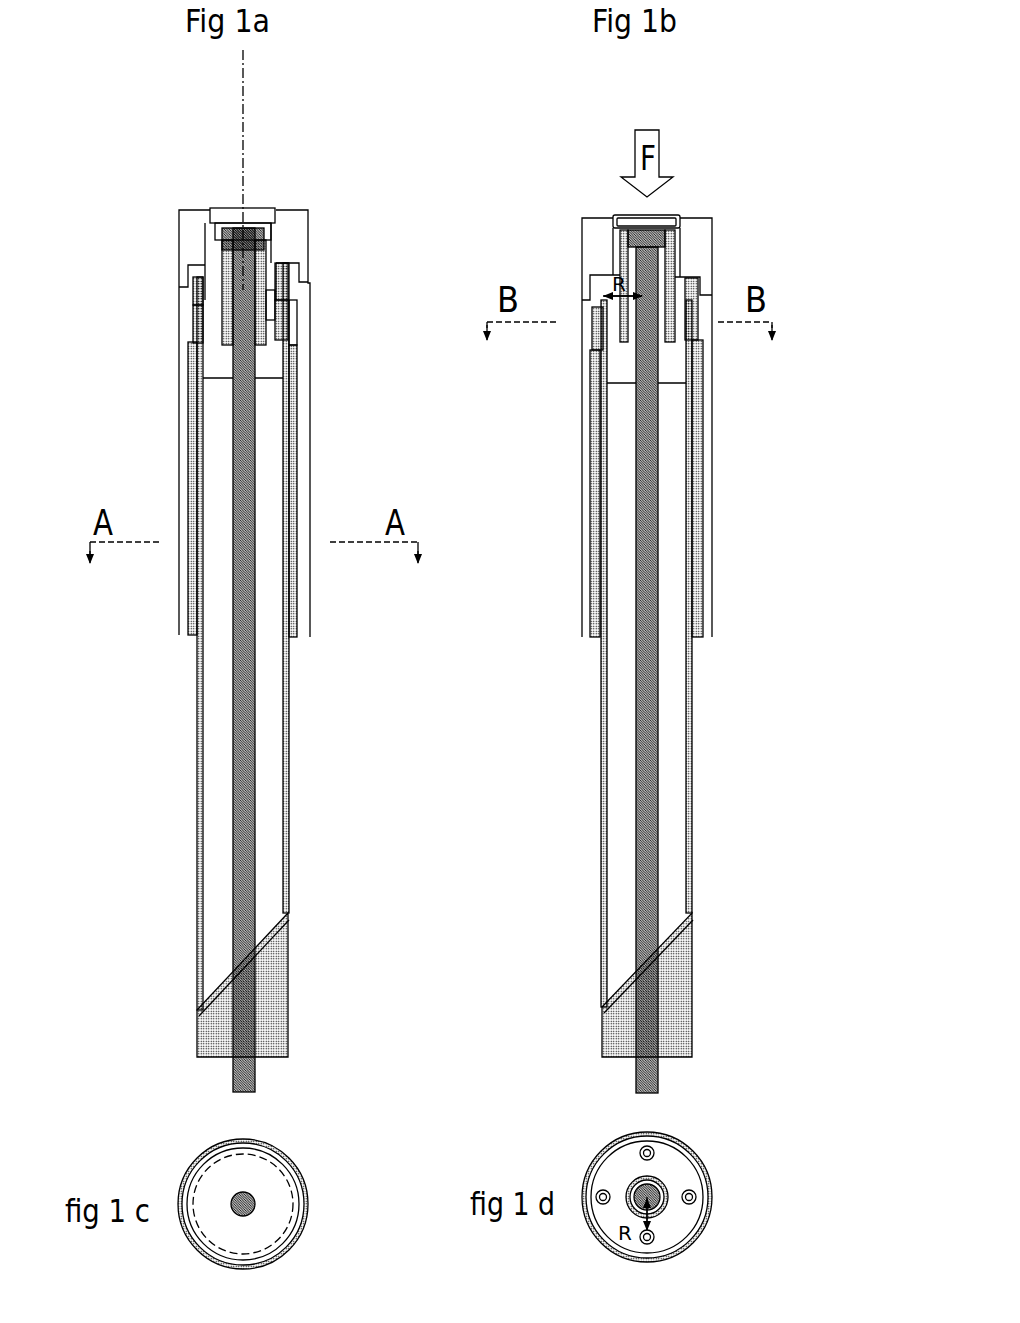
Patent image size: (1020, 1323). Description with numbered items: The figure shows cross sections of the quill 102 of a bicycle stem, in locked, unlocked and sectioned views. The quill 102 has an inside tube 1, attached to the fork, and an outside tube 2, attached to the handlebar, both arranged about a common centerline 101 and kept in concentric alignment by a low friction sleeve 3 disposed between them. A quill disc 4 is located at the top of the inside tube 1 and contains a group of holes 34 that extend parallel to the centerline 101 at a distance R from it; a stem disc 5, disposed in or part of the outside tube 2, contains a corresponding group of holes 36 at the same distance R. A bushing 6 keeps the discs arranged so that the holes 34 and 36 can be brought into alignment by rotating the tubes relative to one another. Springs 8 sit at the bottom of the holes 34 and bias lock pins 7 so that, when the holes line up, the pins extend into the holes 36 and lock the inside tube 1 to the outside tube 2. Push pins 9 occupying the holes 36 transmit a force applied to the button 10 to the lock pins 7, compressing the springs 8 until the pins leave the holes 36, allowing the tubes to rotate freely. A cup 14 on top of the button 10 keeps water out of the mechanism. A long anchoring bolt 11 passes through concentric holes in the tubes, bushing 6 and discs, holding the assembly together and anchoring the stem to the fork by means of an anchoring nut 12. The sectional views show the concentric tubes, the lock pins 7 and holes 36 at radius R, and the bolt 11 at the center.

In FIG. 1a, the inside tube 1 is at (200, 834).
In FIG. 1b, the inside tube 1 is at (604, 653).
In FIG. 1c, the inside tube 1 is at (178, 1195).
In FIG. 1a, the outside tube 2 is at (293, 580).
In FIG. 1b, the outside tube 2 is at (689, 606).
In FIG. 1c, the outside tube 2 is at (307, 1193).
In FIG. 1d, the outside tube 2 is at (582, 1203).
In FIG. 1a, the low friction sleeve 3 is at (303, 585).
In FIG. 1b, the low friction sleeve 3 is at (646, 488).
In FIG. 1c, the low friction sleeve 3 is at (290, 1170).
In FIG. 1a, the quill disc 4 is at (213, 370).
In FIG. 1b, the quill disc 4 is at (647, 305).
In FIG. 1d, the quill disc 4 is at (593, 1192).
In FIG. 1a, the stem disc 5 is at (292, 312).
In FIG. 1a, the bushing 6 is at (261, 250).
In FIG. 1b, the bushing 6 is at (646, 238).
In FIG. 1d, the bushing 6 is at (660, 1198).
In FIG. 1a, the lock pins 7 is at (597, 320).
In FIG. 1d, the lock pins 7 is at (600, 1192).
In FIG. 1a, the springs 8 is at (600, 340).
In FIG. 1a, the push pins 9 is at (288, 270).
In FIG. 1b, the push pins 9 is at (593, 293).
In FIG. 1a, the button 10 is at (597, 233).
In FIG. 1b, the button 10 is at (647, 286).
In FIG. 1a, the anchoring bolt 11 is at (247, 850).
In FIG. 1b, the anchoring bolt 11 is at (707, 767).
In FIG. 1c, the anchoring bolt 11 is at (240, 1200).
In FIG. 1d, the anchoring bolt 11 is at (663, 1207).
In FIG. 1a, the anchoring nut 12 is at (263, 1037).
In FIG. 1b, the anchoring nut 12 is at (647, 985).
In FIG. 1a, the cup 14 is at (233, 214).
In FIG. 1b, the cup 14 is at (646, 221).
In FIG. 1a, the holes 34 is at (200, 330).
In FIG. 1a, the holes 36 is at (192, 295).
In FIG. 1b, the holes 36 is at (597, 328).
In FIG. 1d, the holes 36 is at (692, 1190).
In FIG. 1a, the centerline 101 is at (245, 68).
In FIG. 1a, the quill 102 is at (168, 438).
In FIG. 1b, the quill 102 is at (578, 450).